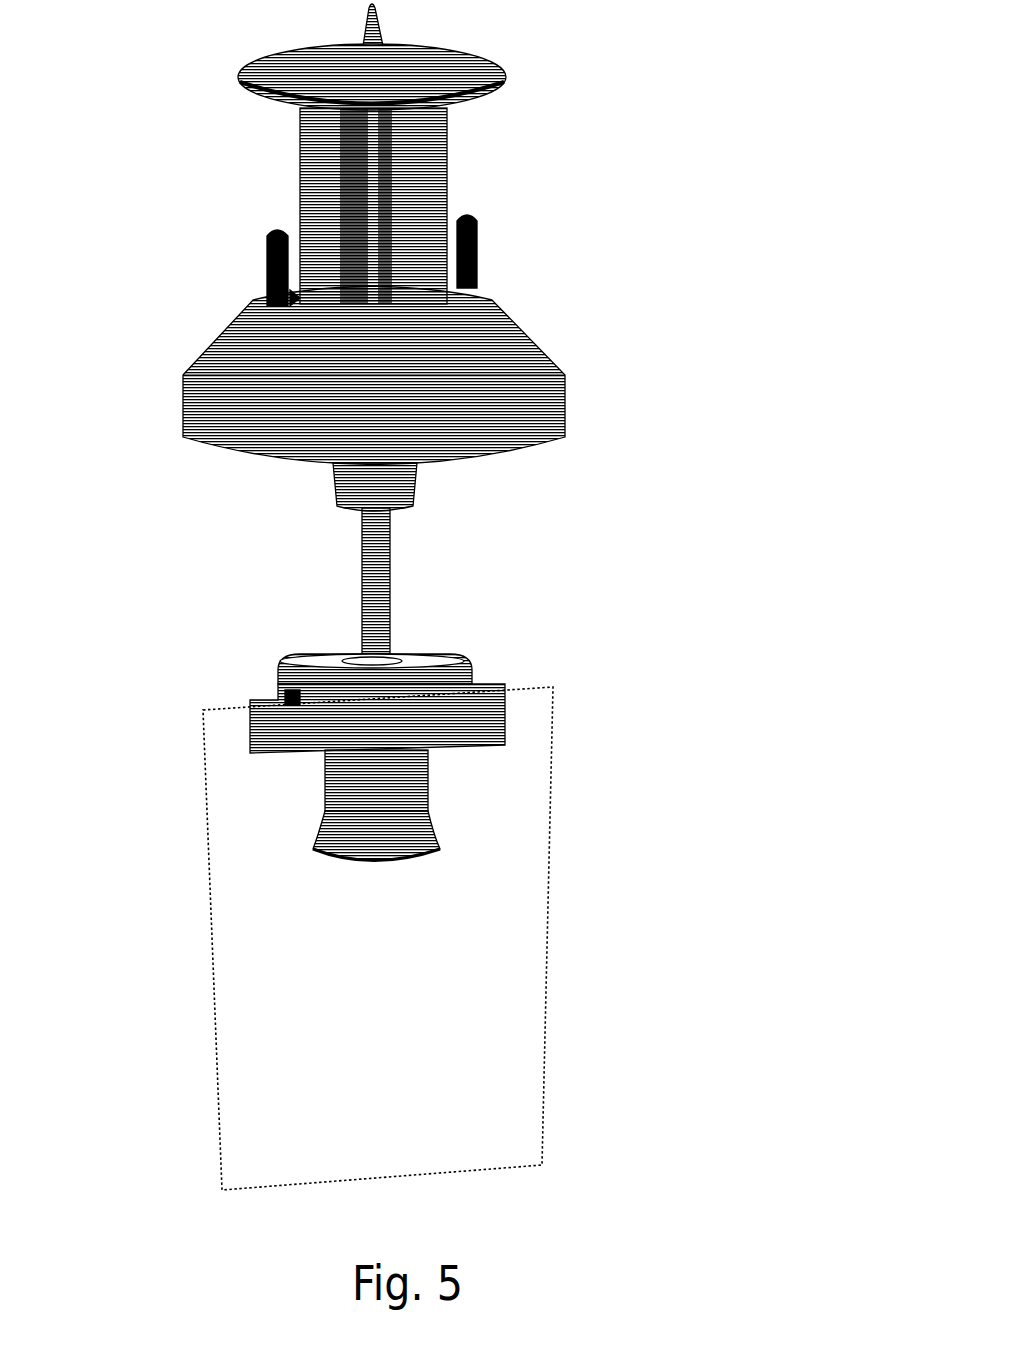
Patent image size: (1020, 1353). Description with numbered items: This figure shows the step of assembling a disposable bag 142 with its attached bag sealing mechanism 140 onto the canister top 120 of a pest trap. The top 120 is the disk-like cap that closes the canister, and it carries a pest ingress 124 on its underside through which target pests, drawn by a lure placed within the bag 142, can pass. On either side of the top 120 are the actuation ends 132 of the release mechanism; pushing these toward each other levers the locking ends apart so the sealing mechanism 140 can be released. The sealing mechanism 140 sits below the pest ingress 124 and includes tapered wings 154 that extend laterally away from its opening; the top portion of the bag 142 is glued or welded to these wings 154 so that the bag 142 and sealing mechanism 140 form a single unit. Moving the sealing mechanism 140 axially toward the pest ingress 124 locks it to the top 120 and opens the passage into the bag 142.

The top 120 is at (588, 296).
The actuation ends 132 is at (273, 250).
The pest ingress 124 is at (312, 494).
The bag sealing mechanism 140 is at (510, 651).
The tapered wings 154 is at (275, 738).
The disposable bag 142 is at (530, 883).